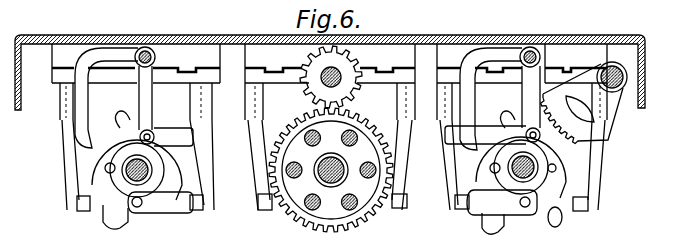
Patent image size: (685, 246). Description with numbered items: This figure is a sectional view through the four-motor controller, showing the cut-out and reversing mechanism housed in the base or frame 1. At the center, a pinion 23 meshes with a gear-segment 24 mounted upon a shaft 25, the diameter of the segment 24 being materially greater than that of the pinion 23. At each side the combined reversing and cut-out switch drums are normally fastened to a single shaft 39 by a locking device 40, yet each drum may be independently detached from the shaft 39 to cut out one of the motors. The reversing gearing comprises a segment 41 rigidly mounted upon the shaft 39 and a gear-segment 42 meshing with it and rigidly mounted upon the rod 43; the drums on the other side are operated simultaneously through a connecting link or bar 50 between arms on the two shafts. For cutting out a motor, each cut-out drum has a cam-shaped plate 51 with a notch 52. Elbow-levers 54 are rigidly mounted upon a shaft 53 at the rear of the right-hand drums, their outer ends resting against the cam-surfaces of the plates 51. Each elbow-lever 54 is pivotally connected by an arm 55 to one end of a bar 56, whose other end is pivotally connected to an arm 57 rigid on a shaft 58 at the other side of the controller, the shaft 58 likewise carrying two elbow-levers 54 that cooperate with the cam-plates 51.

The base or frame 1 is at (644, 39).
The pinion 23 is at (358, 63).
The gear-segment 24 is at (350, 148).
The shaft 25 is at (331, 153).
The shaft 39 is at (152, 170).
The locking device 40 is at (160, 214).
The segment 41 is at (562, 223).
The gear-segment 42 is at (600, 137).
The rod 43 is at (627, 80).
The connecting link or bar 50 is at (176, 213).
The cam-shaped plate 51 is at (120, 180).
The notch 52 is at (110, 224).
The shaft 53 is at (540, 47).
The elbow-lever 54 is at (88, 97).
The arm 55 is at (531, 97).
The bar 56 is at (155, 137).
The arm 57 is at (145, 98).
The shaft 58 is at (151, 48).